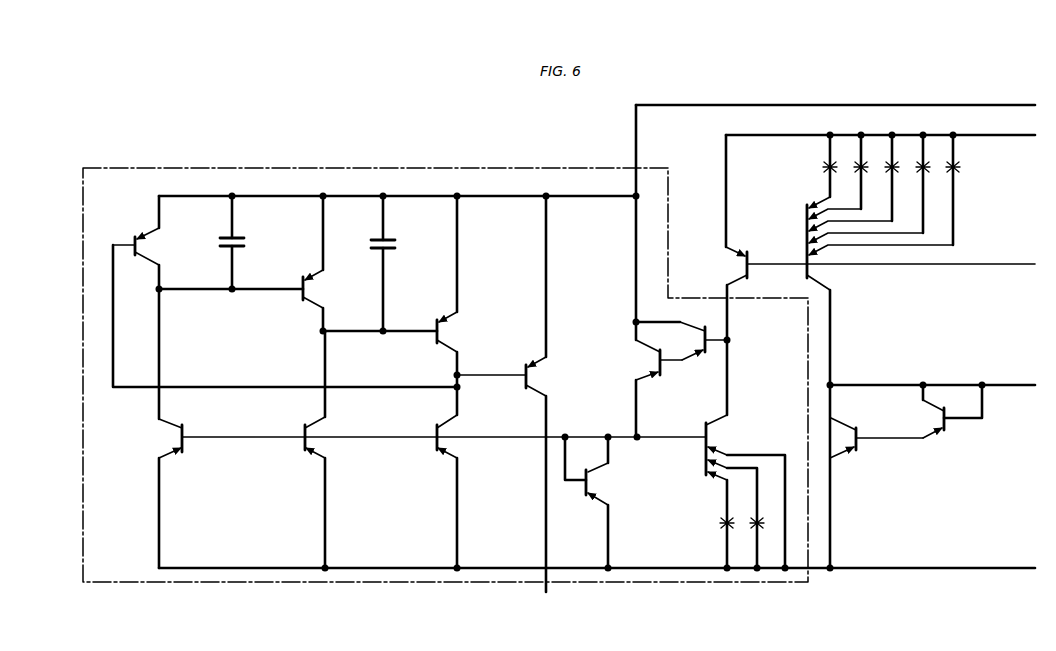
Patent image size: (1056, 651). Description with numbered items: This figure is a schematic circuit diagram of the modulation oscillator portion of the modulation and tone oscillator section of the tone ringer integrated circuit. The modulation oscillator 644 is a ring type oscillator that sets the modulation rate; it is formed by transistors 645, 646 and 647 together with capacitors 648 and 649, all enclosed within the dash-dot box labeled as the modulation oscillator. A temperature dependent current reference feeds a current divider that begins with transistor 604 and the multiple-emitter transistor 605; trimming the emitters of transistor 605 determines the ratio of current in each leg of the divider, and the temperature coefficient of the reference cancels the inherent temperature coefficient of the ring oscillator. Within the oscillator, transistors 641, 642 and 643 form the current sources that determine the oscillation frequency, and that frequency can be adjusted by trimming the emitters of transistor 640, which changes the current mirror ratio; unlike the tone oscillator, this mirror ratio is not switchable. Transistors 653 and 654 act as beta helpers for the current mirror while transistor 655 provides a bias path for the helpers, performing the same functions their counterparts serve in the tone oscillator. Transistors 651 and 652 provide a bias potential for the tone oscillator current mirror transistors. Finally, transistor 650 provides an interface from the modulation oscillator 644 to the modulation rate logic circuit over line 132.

The line 132 is at (546, 506).
The transistor 604 is at (752, 210).
The transistor 605 is at (880, 350).
The transistor 640 is at (745, 426).
The transistor 641 is at (184, 428).
The transistor 642 is at (331, 449).
The transistor 643 is at (463, 477).
The modulation oscillator 644 is at (326, 168).
The transistor 645 is at (150, 242).
The transistor 646 is at (329, 263).
The transistor 647 is at (463, 291).
The capacitor 648 is at (248, 242).
The capacitor 649 is at (399, 263).
The transistor 650 is at (517, 296).
The transistor 651 is at (940, 411).
The transistor 652 is at (876, 444).
The transistor 653 is at (682, 332).
The transistor 654 is at (647, 388).
The transistor 655 is at (602, 502).